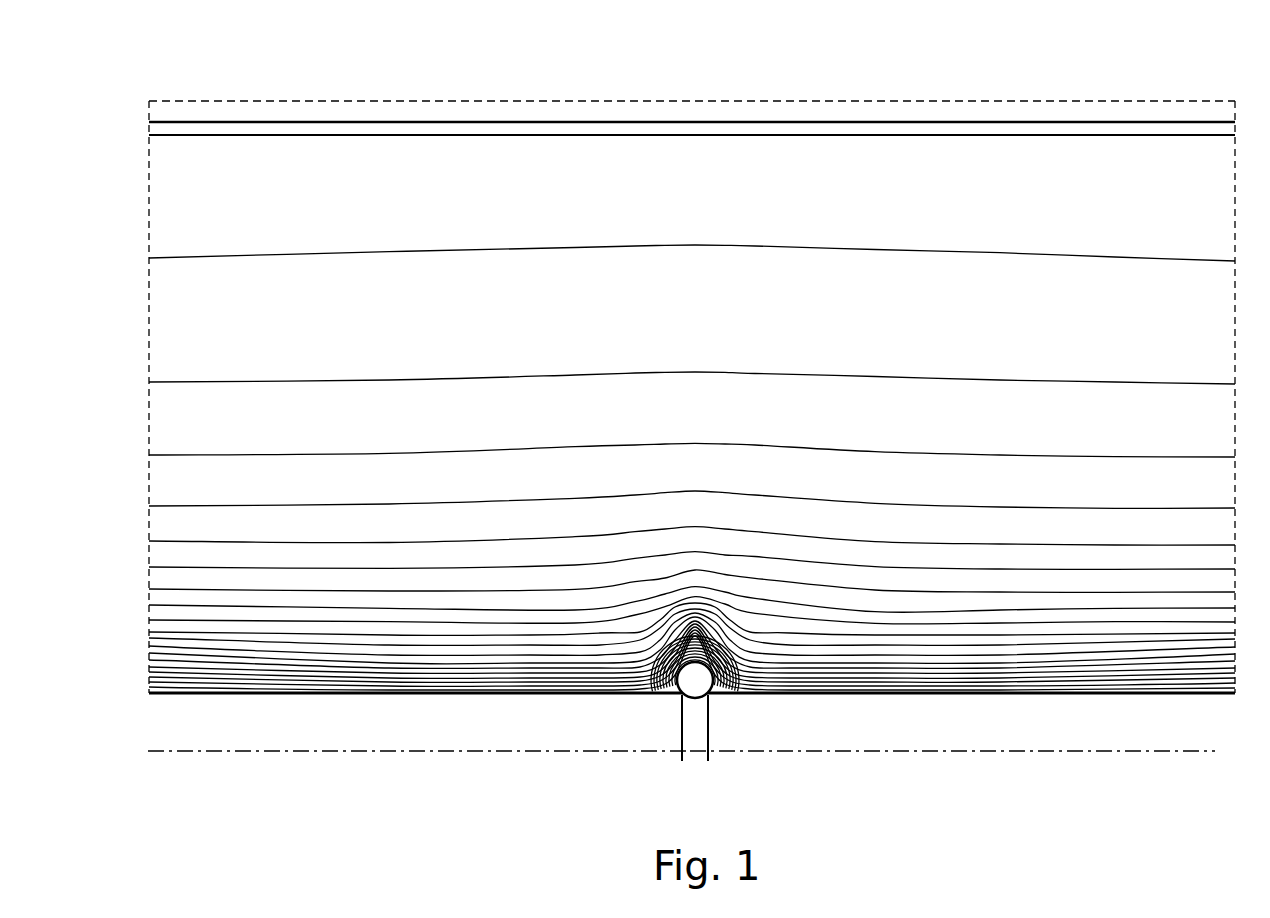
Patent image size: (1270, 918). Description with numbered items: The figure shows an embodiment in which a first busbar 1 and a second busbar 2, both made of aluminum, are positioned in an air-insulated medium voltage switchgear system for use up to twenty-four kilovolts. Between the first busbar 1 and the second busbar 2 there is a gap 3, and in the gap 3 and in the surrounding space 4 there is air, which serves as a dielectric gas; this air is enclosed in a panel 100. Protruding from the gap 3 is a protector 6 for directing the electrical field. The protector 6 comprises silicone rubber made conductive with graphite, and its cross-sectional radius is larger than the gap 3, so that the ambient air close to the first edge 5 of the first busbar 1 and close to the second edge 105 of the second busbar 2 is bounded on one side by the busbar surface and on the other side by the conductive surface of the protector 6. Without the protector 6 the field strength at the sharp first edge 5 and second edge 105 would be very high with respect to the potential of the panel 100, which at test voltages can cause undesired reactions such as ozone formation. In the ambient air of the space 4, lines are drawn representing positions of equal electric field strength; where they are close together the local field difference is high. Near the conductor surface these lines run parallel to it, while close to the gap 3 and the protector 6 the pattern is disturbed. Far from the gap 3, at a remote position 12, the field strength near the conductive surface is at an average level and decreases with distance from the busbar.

The panel 100 is at (510, 122).
The space 4 is at (212, 407).
The remote position 12 is at (319, 696).
The first busbar 1 is at (408, 732).
The second busbar 2 is at (878, 733).
The first edge 5 is at (679, 694).
The protector 6 is at (694, 688).
The gap 3 is at (697, 732).
The second edge 105 is at (713, 694).